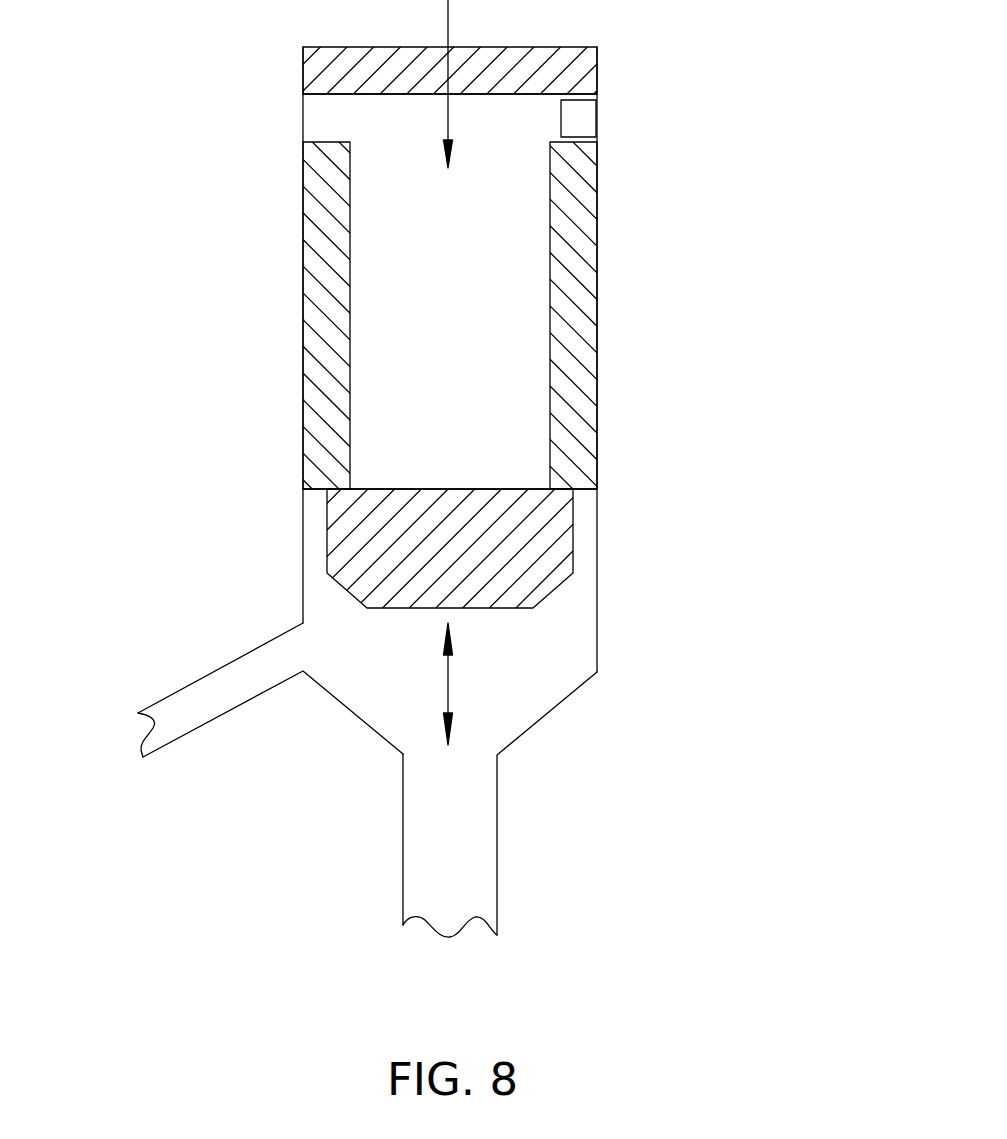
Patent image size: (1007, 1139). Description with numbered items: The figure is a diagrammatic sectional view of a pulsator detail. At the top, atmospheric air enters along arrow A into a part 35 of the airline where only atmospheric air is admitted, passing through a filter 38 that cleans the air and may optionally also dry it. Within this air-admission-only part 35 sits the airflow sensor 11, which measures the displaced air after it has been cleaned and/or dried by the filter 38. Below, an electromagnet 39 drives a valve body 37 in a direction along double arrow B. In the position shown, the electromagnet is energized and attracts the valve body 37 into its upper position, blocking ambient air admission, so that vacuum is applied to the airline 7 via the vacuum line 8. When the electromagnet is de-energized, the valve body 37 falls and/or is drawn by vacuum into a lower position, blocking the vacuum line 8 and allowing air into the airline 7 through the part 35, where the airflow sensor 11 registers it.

The airline 7 is at (217, 693).
The vacuum line 8 is at (455, 850).
The airflow sensor 11 is at (579, 120).
The part of the airline 35 is at (275, 47).
The valve body 37 is at (553, 545).
The filter 38 is at (560, 73).
The electromagnet 39 is at (578, 315).